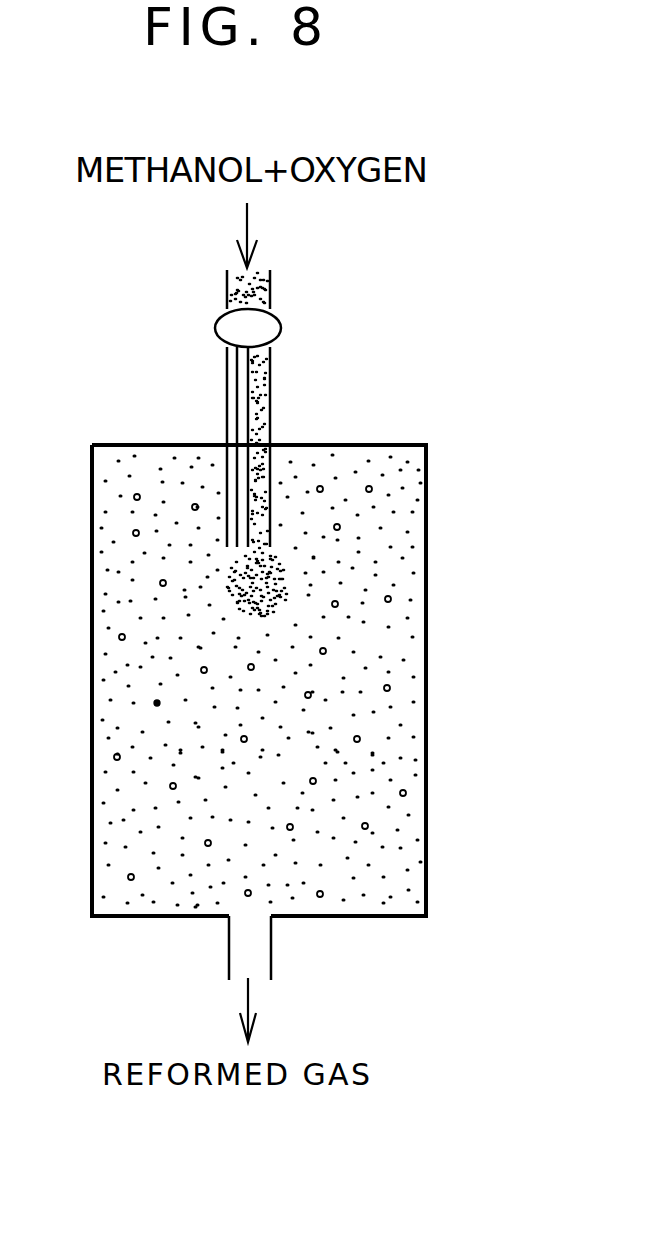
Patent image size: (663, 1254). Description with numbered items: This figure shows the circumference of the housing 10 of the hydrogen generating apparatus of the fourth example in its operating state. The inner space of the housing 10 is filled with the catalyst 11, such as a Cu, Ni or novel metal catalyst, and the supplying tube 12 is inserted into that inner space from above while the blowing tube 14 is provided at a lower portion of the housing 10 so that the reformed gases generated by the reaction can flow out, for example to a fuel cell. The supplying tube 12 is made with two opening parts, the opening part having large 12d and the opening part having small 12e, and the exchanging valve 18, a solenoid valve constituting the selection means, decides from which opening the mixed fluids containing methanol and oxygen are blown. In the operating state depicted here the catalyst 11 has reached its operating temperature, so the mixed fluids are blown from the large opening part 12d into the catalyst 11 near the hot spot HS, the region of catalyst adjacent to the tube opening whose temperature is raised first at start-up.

The housing 10 is at (427, 494).
The catalyst 11 is at (391, 598).
The supplying tube 12 is at (270, 288).
The opening part having large 12d is at (270, 392).
The opening part having small 12e is at (227, 400).
The blowing tube 14 is at (262, 957).
The exchanging valve 18 is at (217, 325).
The hot spot HS is at (282, 602).